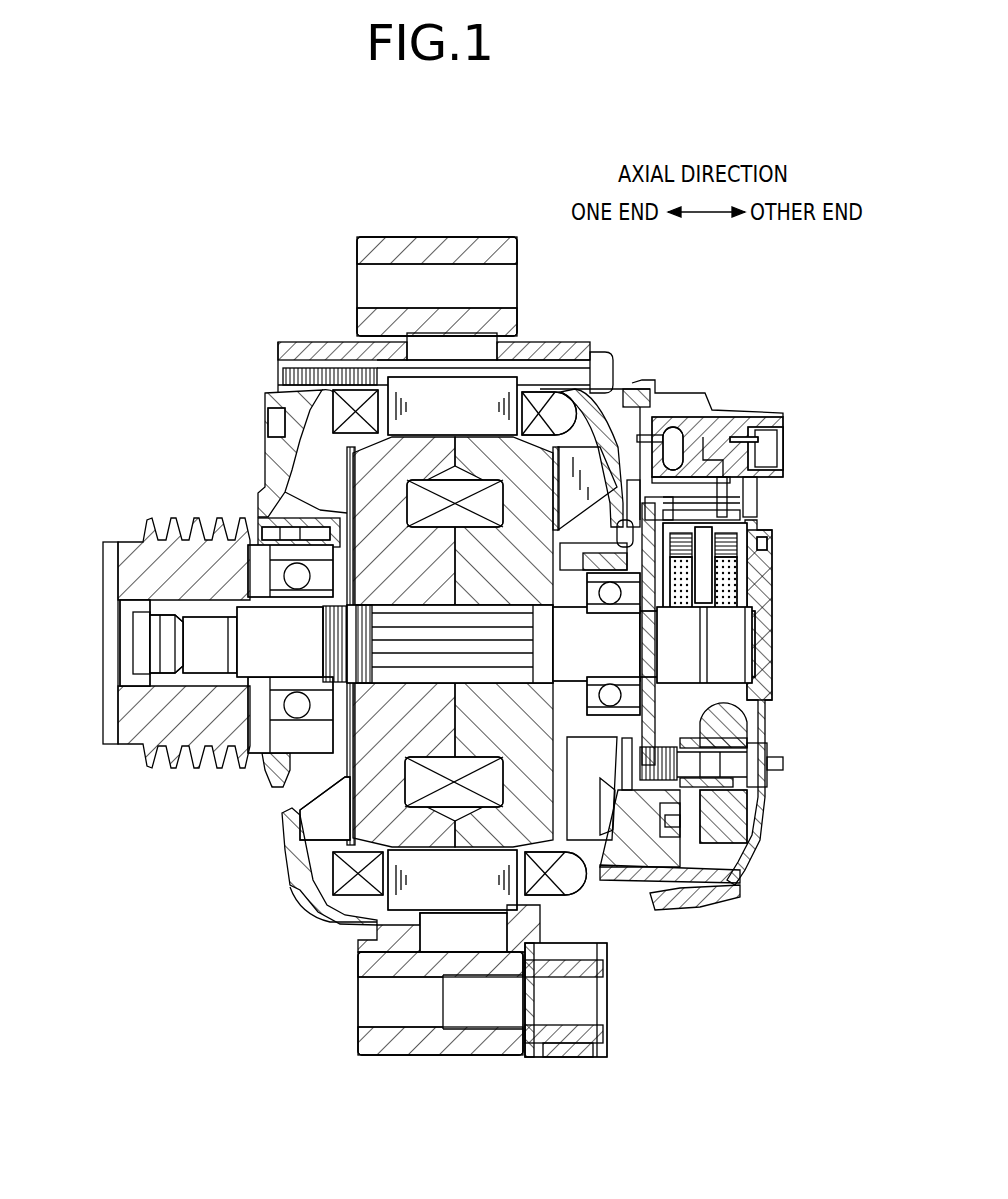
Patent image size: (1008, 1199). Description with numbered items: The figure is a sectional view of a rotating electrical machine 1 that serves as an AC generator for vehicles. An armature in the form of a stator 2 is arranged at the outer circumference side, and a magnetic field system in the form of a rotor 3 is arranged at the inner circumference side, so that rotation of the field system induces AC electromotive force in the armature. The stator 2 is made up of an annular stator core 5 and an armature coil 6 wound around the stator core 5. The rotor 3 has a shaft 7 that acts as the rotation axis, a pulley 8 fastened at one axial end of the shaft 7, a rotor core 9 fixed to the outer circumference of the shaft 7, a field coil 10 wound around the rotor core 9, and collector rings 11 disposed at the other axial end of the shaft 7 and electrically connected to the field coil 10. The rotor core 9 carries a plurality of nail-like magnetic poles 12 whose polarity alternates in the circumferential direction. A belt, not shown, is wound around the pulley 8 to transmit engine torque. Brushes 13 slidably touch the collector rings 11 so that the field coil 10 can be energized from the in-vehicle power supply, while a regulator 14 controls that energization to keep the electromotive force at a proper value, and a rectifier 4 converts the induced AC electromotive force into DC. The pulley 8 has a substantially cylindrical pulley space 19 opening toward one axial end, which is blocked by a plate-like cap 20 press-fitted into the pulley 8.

The rotating electrical machine 1 is at (176, 150).
The stator 2 is at (298, 218).
The rotor 3 is at (176, 497).
The rectifier 4 is at (747, 717).
The stator core 5 is at (447, 390).
The armature coil 6 is at (357, 400).
The shaft 7 is at (257, 660).
The pulley 8 is at (126, 765).
The rotor core 9 is at (350, 807).
The field coil 10 is at (490, 782).
The collector rings 11 is at (683, 641).
The nail-like magnetic poles 12 is at (442, 833).
The brushes 13 is at (730, 580).
The regulator 14 is at (718, 482).
The pulley space 19 is at (140, 665).
The cap 20 is at (120, 632).